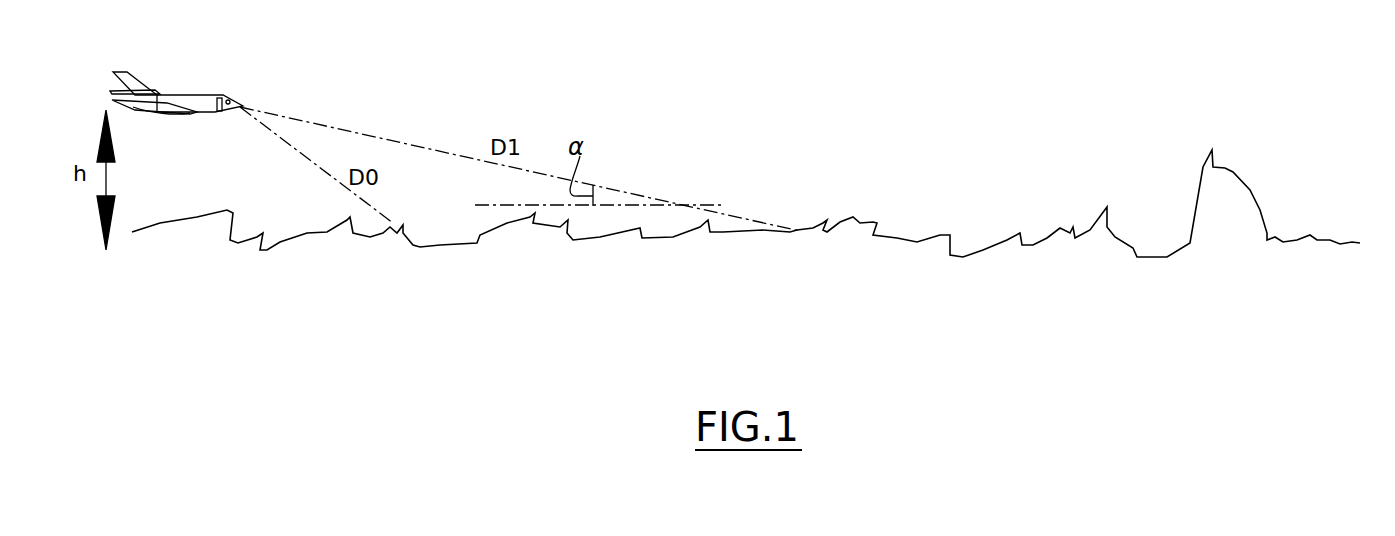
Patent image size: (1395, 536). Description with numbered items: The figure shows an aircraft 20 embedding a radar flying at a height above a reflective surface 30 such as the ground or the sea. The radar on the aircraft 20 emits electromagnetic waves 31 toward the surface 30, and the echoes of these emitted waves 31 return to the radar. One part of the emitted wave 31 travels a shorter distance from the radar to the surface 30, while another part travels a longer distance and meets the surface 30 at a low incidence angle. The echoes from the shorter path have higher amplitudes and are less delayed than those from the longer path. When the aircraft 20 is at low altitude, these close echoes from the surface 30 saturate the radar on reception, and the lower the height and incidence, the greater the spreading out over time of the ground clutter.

The aircraft 20 is at (188, 93).
The surface 30 is at (1225, 166).
The electromagnetic waves 31 is at (307, 157).